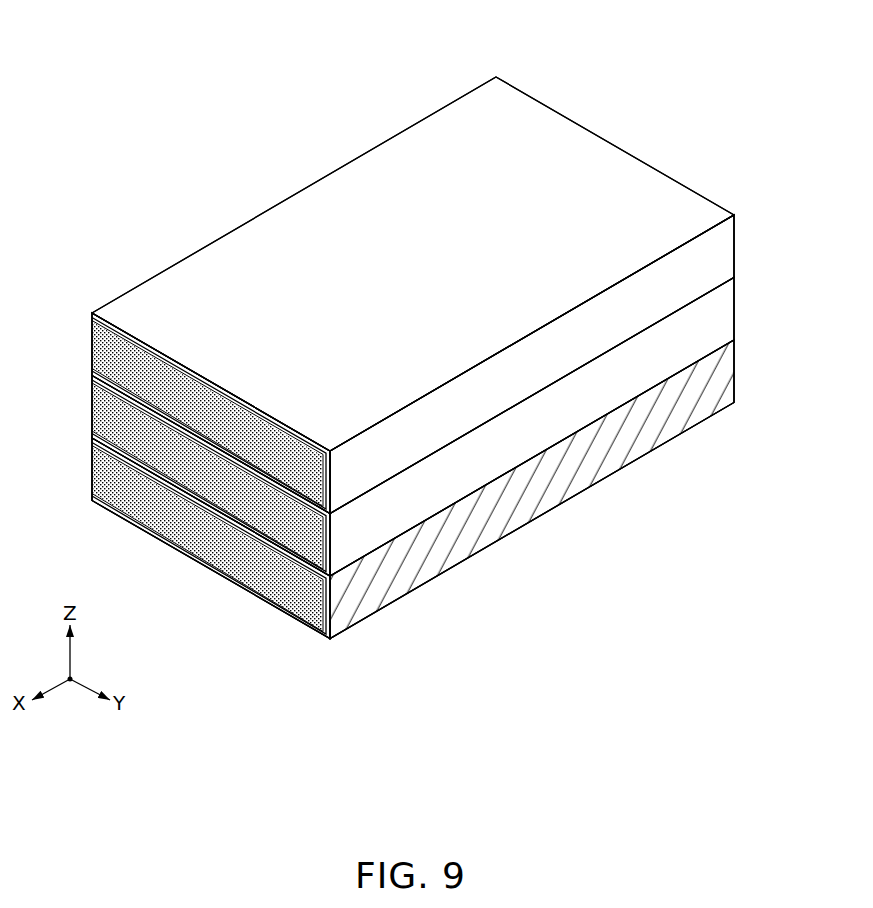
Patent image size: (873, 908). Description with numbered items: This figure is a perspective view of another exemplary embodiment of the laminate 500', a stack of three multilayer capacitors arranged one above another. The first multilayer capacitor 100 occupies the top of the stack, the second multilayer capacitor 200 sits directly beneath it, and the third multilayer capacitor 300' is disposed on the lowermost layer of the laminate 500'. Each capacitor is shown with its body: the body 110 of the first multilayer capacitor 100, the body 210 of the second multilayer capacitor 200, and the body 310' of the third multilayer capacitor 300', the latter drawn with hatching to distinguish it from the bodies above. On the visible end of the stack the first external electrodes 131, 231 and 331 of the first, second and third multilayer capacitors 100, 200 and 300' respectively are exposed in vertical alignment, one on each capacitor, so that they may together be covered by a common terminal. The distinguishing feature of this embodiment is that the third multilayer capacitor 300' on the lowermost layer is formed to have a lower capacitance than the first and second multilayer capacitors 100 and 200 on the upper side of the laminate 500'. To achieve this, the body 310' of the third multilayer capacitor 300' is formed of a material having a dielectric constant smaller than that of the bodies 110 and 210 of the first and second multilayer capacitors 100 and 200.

The laminate 500' is at (413, 325).
The first multilayer capacitor 100 is at (737, 231).
The second multilayer capacitor 200 is at (737, 313).
The third multilayer capacitor 300' is at (457, 477).
The body 110 is at (538, 357).
The body 210 is at (502, 455).
The body 310' is at (532, 489).
The first external electrode 131 is at (100, 358).
The first external electrode 231 is at (100, 418).
The first external electrode 331 is at (100, 483).